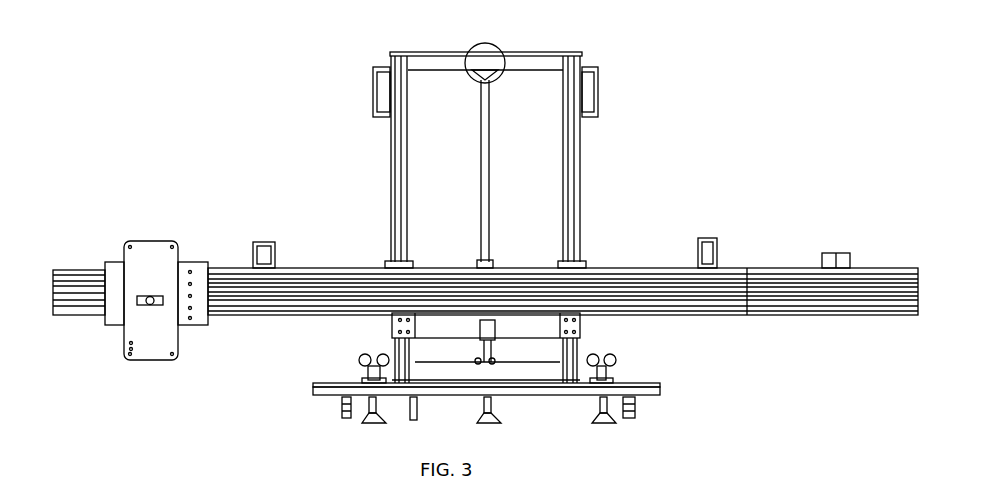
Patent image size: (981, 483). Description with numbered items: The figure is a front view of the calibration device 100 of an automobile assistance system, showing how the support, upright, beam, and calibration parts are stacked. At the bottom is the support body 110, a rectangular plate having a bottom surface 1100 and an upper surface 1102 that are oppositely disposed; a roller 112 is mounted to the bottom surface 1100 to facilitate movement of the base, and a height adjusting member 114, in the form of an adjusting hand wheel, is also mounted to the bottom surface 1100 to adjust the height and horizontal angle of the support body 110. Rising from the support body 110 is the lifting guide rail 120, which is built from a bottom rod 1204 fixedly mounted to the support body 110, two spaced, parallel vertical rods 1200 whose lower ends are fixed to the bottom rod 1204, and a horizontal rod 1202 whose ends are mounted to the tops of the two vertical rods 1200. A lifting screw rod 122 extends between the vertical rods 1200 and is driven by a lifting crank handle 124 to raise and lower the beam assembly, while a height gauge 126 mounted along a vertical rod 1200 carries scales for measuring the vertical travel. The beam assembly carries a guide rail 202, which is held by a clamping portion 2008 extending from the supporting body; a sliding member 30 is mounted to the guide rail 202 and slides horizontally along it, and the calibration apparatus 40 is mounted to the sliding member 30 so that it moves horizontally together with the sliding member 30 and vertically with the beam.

The calibration device 100 is at (697, 123).
The lifting guide rail 120 is at (483, 139).
The vertical rod 1200 is at (390, 150).
The horizontal rod 1202 is at (442, 57).
The lifting crank handle 124 is at (480, 45).
The height gauge 126 is at (412, 112).
The lifting screw rod 122 is at (480, 200).
The clamping portion 2008 is at (582, 250).
The guide rail 202 is at (742, 268).
The calibration apparatus 40 is at (140, 240).
The sliding member 30 is at (115, 262).
The bottom rod 1204 is at (390, 350).
The height adjusting member 114 is at (612, 360).
The support body 110 is at (424, 389).
The upper surface 1102 is at (325, 383).
The bottom surface 1100 is at (318, 392).
The roller 112 is at (636, 408).